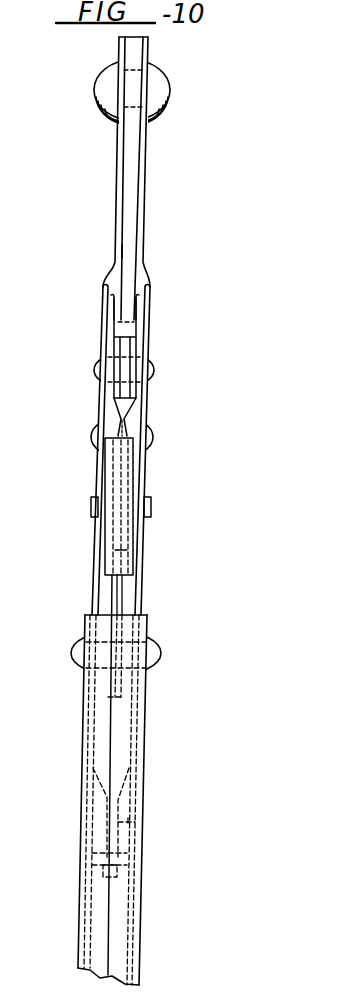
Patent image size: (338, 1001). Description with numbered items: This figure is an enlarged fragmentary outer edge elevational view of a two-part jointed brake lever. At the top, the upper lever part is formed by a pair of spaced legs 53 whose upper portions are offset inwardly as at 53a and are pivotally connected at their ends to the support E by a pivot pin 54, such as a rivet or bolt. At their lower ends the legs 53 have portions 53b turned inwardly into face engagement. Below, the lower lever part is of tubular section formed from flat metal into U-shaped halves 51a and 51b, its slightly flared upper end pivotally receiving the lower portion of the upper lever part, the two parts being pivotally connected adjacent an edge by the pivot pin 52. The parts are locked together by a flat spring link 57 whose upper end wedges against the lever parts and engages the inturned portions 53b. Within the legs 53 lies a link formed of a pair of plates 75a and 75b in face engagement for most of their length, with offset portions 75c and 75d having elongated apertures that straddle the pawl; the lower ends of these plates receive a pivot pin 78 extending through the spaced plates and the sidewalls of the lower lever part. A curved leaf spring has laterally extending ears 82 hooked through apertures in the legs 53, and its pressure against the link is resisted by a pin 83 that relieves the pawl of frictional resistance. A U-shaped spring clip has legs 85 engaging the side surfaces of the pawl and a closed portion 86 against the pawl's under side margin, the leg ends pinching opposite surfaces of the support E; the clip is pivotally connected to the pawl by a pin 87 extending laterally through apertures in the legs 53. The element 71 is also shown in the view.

The pivot pin 54 is at (170, 88).
The inwardly offset upper portions of legs 53a is at (145, 182).
The support E is at (129, 255).
The spaced legs 53 is at (110, 277).
The inner member 71 is at (126, 352).
The closed portion of spring clip 86 is at (114, 309).
The legs of spring clip 85 is at (135, 313).
The offset portion of link plate 75d is at (137, 344).
The offset portion of link plate 75c is at (108, 344).
The link plate 75b is at (117, 408).
The link plate 75a is at (131, 411).
The pin 87 is at (154, 369).
The pin 83 is at (153, 443).
The laterally extending ears 82 is at (91, 507).
The pivot pin 78 is at (148, 647).
The pivot pin 52 is at (161, 657).
The U-shaped half of lower lever part 51a is at (80, 773).
The U-shaped half of lower lever part 51b is at (142, 774).
The inturned portions of legs 53b is at (130, 822).
The flat spring link 57 is at (128, 910).